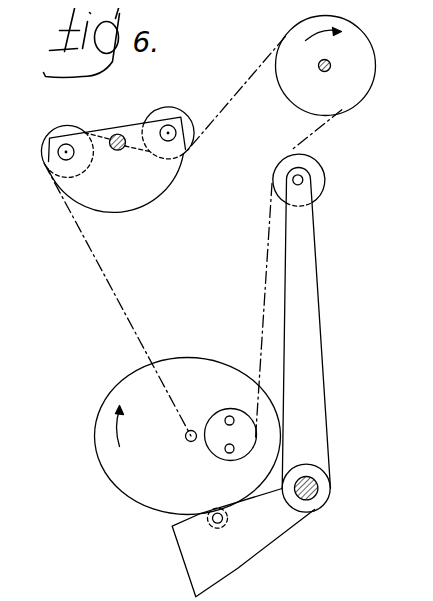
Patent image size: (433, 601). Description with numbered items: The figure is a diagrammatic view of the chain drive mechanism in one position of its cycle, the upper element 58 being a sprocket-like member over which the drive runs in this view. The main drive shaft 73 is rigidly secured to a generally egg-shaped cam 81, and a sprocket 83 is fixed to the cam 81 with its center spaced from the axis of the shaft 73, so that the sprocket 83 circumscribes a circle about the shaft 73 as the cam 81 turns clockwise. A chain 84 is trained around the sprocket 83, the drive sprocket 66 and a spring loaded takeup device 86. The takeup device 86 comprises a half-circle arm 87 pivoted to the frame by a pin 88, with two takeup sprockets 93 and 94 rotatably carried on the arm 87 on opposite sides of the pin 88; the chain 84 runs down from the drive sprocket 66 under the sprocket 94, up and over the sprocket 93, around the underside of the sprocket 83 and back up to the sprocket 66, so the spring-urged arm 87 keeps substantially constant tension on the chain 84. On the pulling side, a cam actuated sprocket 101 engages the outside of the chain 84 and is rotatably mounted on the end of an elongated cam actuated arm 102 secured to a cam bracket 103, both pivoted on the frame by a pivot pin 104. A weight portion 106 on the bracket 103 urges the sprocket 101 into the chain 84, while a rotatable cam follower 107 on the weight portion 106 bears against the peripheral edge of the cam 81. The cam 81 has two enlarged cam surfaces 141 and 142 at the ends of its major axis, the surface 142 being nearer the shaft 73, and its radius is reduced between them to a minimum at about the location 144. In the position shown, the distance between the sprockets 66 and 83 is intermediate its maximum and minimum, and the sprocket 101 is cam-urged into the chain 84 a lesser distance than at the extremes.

The drive pulley 58 is at (322, 73).
The drive sprocket 66 is at (286, 80).
The main drive shaft 73 is at (184, 443).
The cam 81 is at (116, 498).
The sprocket 83 is at (239, 411).
The chain 84 is at (111, 294).
The spring loaded takeup device 86 is at (146, 210).
The arm 87 is at (156, 182).
The pin 88 is at (118, 135).
The takeup sprocket 93 is at (58, 128).
The takeup sprocket 94 is at (151, 113).
The cam actuated sprocket 101 is at (315, 185).
The cam actuated arm 102 is at (309, 342).
The cam bracket 103 is at (203, 356).
The pivot pin 104 is at (315, 491).
The weight portion 106 is at (188, 552).
The cam follower 107 is at (225, 520).
The cam surface 141 is at (92, 438).
The cam surface 142 is at (280, 448).
The minimum radius location 144 is at (196, 532).